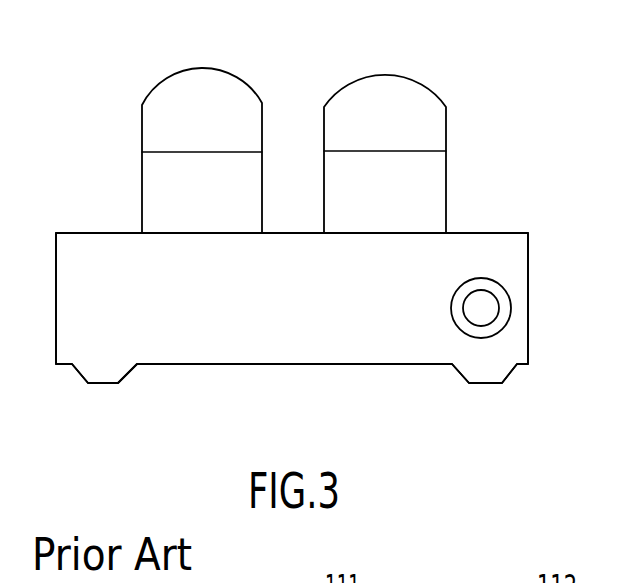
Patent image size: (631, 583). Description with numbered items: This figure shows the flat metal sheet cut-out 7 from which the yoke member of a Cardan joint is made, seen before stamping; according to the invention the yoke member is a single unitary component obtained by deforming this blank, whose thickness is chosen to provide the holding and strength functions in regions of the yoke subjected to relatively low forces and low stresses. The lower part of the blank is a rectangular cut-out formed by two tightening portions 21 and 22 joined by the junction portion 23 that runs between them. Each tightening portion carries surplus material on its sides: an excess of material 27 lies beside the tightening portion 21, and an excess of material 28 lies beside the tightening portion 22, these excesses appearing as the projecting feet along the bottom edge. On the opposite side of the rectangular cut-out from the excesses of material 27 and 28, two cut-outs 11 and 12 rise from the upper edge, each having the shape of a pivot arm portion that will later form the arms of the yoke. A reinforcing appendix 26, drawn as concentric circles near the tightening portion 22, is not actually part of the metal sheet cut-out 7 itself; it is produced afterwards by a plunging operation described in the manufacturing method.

The metal sheet cut-out 7 is at (108, 203).
The cut-out 11 is at (202, 107).
The cut-out 12 is at (413, 190).
The tightening portion 21 is at (112, 296).
The tightening portion 22 is at (437, 302).
The junction portion 23 is at (305, 303).
The reinforcing appendix 26 is at (502, 302).
The excess of material 27 is at (103, 370).
The excess of material 28 is at (487, 372).